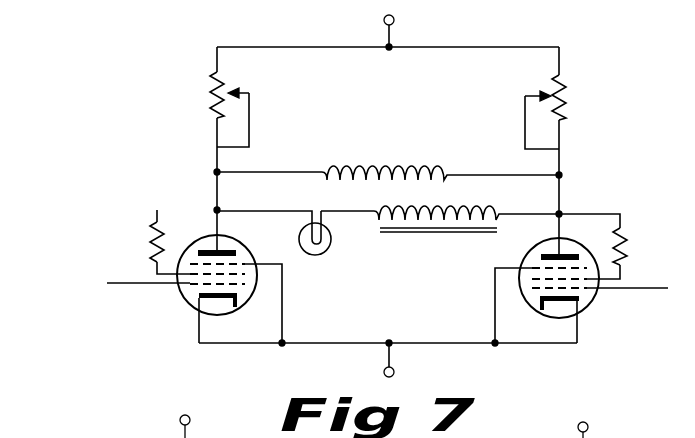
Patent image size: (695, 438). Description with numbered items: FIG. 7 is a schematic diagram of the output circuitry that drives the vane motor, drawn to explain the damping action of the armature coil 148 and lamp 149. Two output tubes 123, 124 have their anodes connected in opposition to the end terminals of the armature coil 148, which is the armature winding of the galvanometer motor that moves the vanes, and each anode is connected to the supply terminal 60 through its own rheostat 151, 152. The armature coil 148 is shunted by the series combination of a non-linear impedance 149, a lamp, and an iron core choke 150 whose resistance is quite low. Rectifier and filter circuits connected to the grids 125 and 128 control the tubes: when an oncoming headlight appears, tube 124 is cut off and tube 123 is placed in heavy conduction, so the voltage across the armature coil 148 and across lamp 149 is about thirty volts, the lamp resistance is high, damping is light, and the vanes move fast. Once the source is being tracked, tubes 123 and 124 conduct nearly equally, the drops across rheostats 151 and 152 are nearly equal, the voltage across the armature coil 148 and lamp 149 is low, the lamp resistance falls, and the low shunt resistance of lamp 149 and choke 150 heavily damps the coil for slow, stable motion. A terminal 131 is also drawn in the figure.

The supply terminal 60 is at (385, 20).
The rheostat 151 is at (212, 97).
The rheostat 152 is at (568, 98).
The armature coil 148 is at (388, 170).
The iron core choke 150 is at (455, 210).
The non-linear impedance 149 is at (323, 252).
The output tube 123 is at (185, 301).
The output tube 124 is at (588, 303).
The grid 128 is at (128, 282).
The grid 125 is at (648, 287).
The +12V supply terminal 131 is at (383, 372).